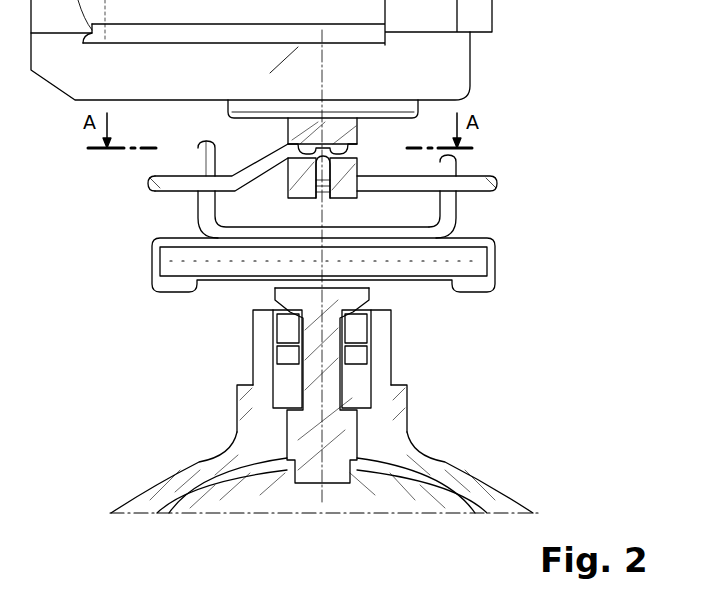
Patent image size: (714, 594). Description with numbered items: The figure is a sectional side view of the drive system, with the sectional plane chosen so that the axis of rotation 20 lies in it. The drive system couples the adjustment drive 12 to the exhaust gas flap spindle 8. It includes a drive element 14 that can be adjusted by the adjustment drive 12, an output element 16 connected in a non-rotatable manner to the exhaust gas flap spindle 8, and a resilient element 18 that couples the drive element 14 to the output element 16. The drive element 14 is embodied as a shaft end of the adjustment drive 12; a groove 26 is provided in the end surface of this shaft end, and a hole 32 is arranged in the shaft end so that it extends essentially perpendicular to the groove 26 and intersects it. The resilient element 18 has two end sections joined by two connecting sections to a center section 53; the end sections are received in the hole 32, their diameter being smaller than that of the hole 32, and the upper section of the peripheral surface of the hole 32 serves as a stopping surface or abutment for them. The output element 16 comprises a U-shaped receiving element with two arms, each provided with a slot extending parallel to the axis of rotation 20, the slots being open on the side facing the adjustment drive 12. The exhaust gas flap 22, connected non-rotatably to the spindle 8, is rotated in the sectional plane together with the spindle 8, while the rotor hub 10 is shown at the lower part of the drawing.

The exhaust gas flap spindle 8 is at (325, 476).
The rotor hub 10 is at (198, 470).
The adjustment drive 12 is at (458, 70).
The drive element 14 is at (205, 122).
The output element 16 is at (132, 219).
The resilient element 18 is at (497, 183).
The axis of rotation 20 is at (322, 392).
The exhaust gas flap 22 is at (393, 505).
The groove 26 is at (325, 198).
The hole 32 is at (345, 154).
The center section 53 is at (320, 198).